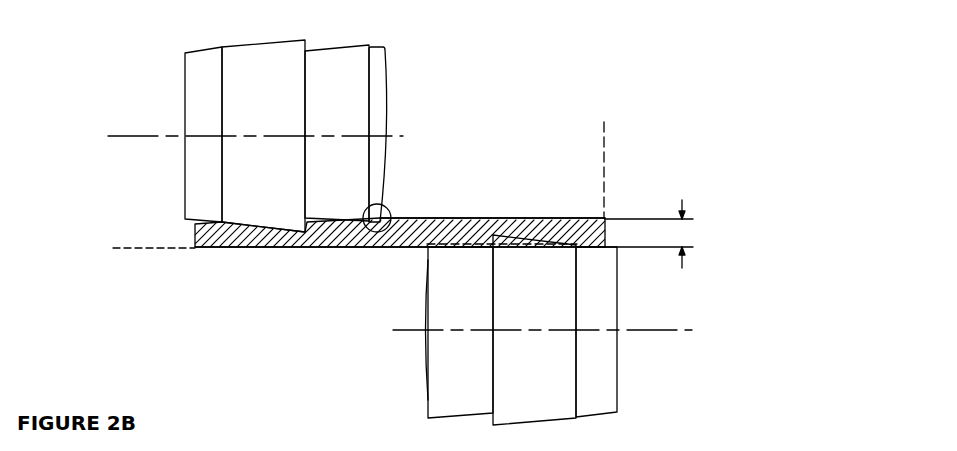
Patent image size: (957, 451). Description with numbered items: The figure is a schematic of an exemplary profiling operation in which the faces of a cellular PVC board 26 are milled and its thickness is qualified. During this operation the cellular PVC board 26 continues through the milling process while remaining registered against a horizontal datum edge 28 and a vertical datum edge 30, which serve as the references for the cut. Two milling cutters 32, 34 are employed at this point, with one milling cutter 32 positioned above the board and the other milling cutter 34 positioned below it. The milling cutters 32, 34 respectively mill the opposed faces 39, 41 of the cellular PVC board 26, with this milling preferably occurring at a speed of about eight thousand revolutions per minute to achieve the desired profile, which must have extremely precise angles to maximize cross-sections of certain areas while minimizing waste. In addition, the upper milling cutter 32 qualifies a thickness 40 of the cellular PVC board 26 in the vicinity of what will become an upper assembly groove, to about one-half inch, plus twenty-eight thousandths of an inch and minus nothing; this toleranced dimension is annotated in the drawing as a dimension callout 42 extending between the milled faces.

The cellular PVC board 26 is at (364, 248).
The horizontal datum edge 28 is at (141, 250).
The vertical datum edge 30 is at (607, 173).
The milling cutter 32 is at (278, 60).
The milling cutter 34 is at (605, 388).
The face 39 is at (475, 217).
The thickness 40 is at (389, 212).
The face 41 is at (237, 252).
The thickness dimension 42 is at (686, 234).